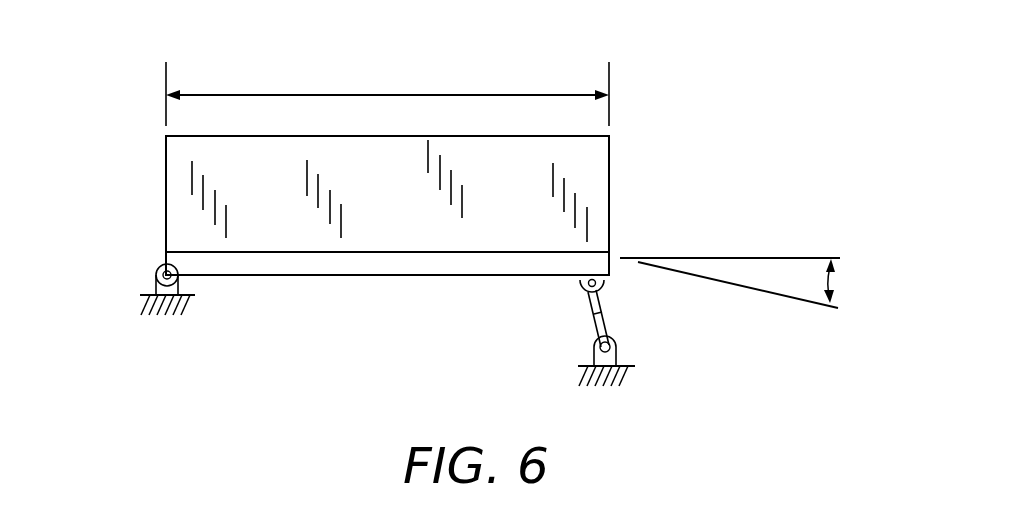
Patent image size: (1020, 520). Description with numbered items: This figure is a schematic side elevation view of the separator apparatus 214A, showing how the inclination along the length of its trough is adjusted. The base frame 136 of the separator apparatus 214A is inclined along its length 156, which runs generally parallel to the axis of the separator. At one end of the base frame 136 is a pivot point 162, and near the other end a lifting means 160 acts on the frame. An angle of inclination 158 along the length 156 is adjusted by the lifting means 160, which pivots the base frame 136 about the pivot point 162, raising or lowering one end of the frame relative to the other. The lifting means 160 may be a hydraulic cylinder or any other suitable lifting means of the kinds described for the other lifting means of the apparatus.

The separator apparatus 214A is at (556, 80).
The length 156 is at (245, 94).
The base frame 136 is at (277, 260).
The pivot point 162 is at (155, 277).
The lifting means 160 is at (594, 322).
The angle of inclination 158 is at (834, 281).